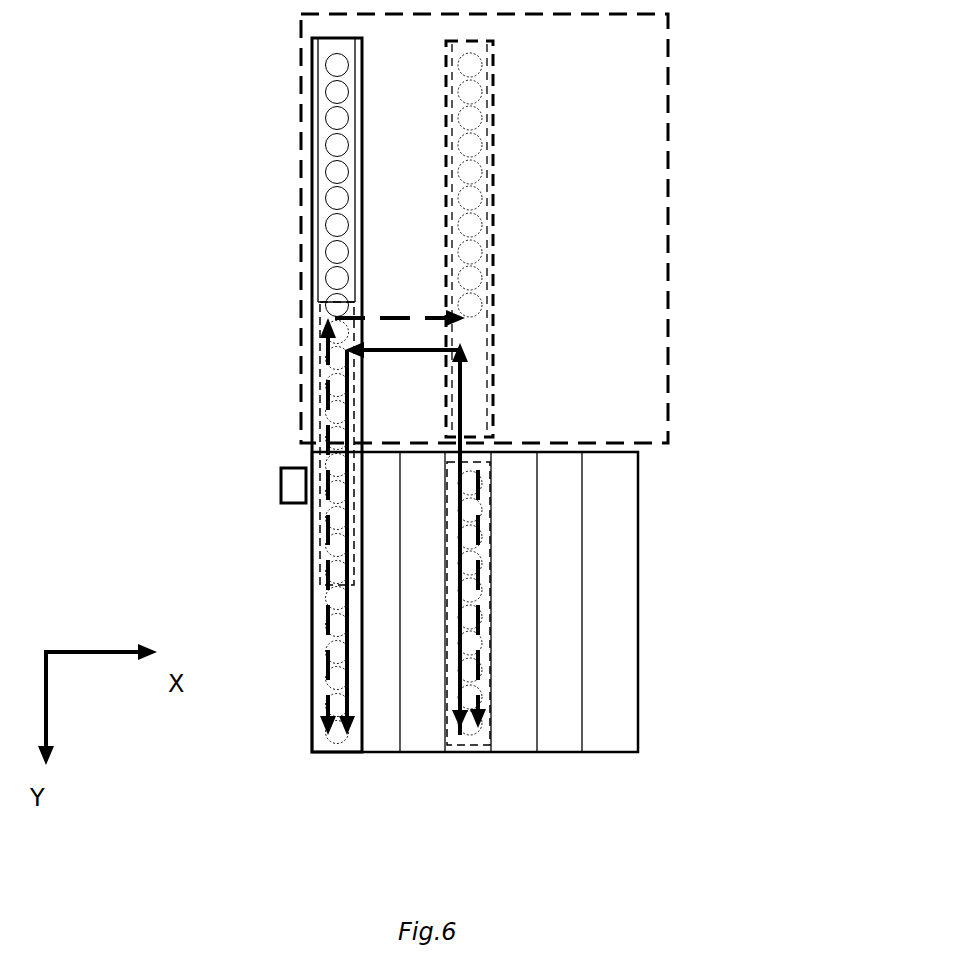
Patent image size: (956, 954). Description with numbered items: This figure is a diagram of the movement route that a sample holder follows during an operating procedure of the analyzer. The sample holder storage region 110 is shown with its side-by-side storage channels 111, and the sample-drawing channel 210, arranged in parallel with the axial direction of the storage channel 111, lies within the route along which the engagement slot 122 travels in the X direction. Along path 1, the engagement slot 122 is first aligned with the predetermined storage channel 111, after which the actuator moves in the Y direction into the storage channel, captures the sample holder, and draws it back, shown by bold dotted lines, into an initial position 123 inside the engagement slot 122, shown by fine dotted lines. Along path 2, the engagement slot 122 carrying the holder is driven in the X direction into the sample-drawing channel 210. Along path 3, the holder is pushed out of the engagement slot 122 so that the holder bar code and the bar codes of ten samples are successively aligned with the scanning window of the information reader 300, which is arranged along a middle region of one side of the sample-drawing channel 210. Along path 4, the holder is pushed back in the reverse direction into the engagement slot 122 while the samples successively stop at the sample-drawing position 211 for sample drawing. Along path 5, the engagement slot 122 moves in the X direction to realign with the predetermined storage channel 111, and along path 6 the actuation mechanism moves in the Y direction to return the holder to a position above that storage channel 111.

The sample holder storage region 110 is at (638, 603).
The storage channel 111 is at (518, 752).
The engagement slot 122 is at (491, 280).
The initial position 123 is at (491, 128).
The sample-drawing channel 210 is at (313, 253).
The sample-drawing position 211 is at (300, 317).
The information reader 300 is at (268, 483).
The path 1 is at (446, 675).
The path 2 is at (406, 538).
The path 3 is at (360, 542).
The path 4 is at (311, 526).
The path 5 is at (400, 307).
The path 6 is at (490, 599).